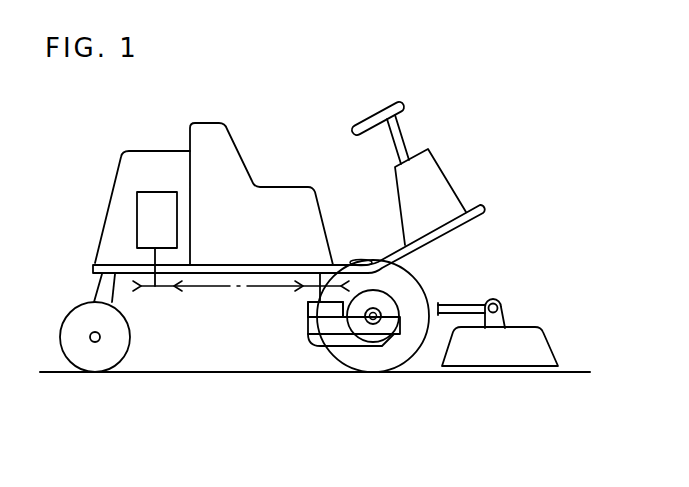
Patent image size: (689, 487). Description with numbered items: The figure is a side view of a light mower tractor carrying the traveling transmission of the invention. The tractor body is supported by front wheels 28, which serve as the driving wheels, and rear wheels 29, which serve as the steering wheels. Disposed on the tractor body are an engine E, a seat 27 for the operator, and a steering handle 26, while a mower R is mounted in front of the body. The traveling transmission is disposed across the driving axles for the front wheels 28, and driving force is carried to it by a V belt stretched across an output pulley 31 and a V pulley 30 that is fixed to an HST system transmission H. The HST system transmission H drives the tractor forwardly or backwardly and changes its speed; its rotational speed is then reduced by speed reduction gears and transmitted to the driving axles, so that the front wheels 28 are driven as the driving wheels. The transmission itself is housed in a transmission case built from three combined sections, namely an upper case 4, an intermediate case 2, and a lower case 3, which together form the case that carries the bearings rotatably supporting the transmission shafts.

The intermediate case 2 is at (308, 326).
The lower case 3 is at (322, 347).
The upper case 4 is at (392, 296).
The steering handle 26 is at (404, 104).
The seat 27 is at (238, 151).
The front wheels 28 is at (414, 277).
The rear wheels 29 is at (131, 340).
The V pulley 30 is at (320, 301).
The output pulley 31 is at (144, 287).
The engine E is at (157, 239).
The HST system transmission H is at (308, 309).
The mower R is at (546, 331).